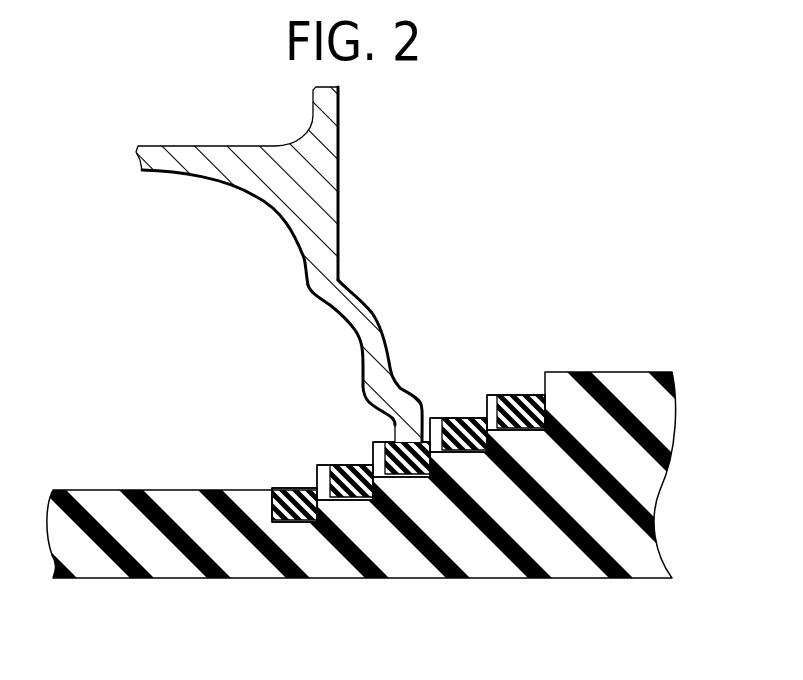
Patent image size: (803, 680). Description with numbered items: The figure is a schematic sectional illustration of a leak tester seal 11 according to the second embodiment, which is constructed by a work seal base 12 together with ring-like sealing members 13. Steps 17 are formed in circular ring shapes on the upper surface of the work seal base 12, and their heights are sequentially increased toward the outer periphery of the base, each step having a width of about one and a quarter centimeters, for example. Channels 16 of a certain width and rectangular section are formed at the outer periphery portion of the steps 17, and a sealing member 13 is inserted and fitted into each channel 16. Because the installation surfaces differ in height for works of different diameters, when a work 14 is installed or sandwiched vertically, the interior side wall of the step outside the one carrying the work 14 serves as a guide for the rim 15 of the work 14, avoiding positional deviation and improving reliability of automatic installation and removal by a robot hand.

The leak tester seal 11 is at (549, 246).
The work seal base 12 is at (647, 478).
The sealing member 13 is at (520, 407).
The work 14 is at (323, 152).
The rim 15 is at (362, 347).
The channel 16 is at (358, 499).
The step 17 is at (341, 425).